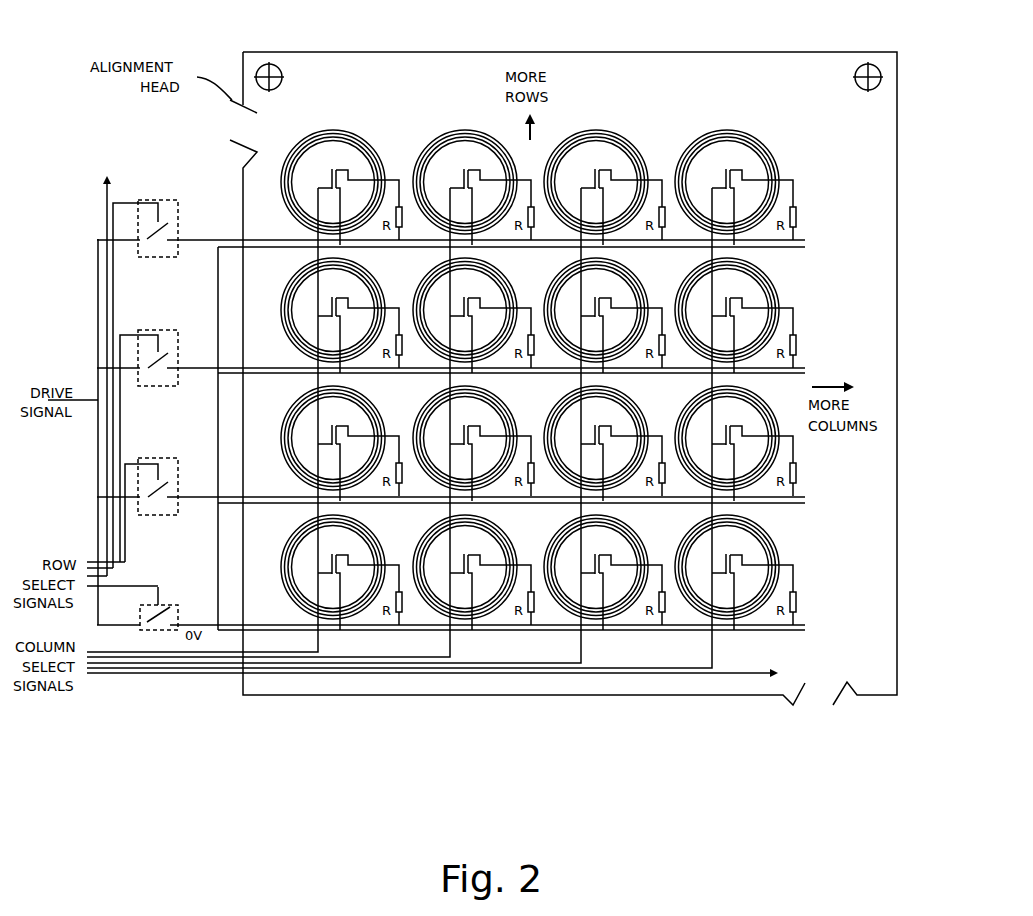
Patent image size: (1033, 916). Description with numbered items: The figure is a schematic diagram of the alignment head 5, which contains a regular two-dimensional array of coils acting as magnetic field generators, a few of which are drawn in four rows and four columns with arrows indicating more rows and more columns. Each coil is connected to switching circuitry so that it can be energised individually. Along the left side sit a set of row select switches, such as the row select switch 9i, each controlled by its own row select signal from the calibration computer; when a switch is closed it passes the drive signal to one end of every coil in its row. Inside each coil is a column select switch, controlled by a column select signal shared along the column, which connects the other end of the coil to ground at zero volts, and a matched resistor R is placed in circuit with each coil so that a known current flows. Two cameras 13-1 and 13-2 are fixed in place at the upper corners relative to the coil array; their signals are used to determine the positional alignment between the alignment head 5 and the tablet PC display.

The alignment head 5 is at (517, 52).
The camera 13-1 is at (276, 66).
The camera 13-2 is at (859, 67).
The row select switch 9i is at (160, 200).